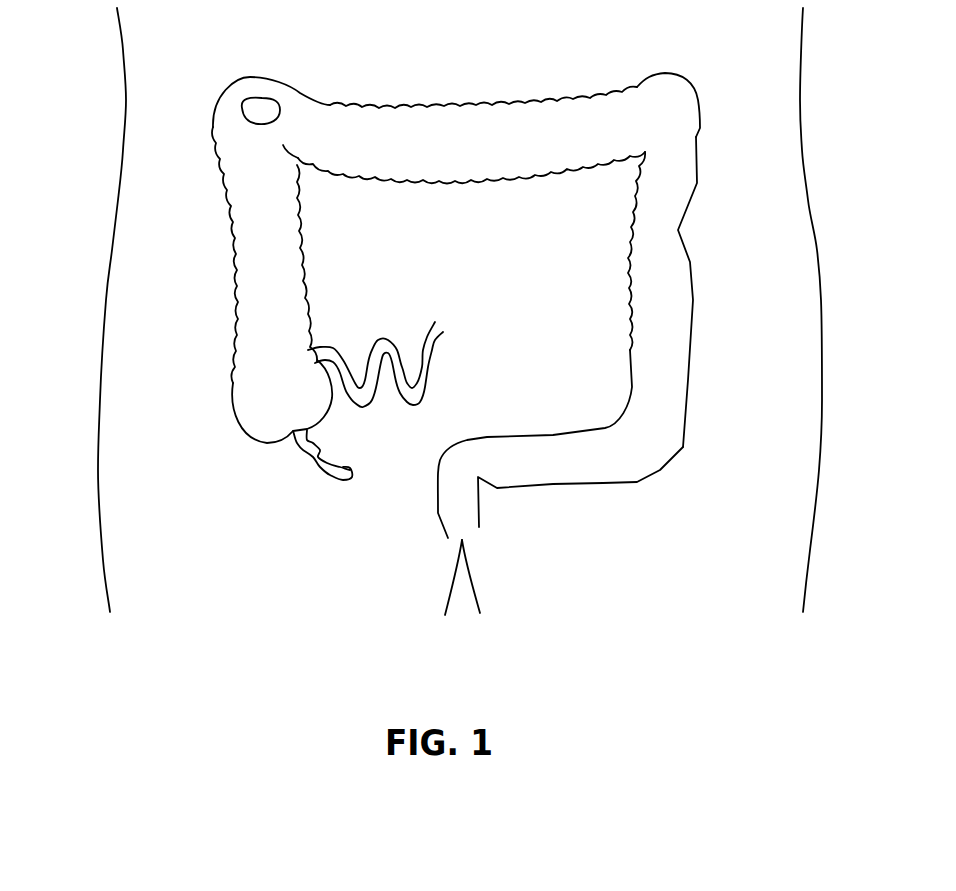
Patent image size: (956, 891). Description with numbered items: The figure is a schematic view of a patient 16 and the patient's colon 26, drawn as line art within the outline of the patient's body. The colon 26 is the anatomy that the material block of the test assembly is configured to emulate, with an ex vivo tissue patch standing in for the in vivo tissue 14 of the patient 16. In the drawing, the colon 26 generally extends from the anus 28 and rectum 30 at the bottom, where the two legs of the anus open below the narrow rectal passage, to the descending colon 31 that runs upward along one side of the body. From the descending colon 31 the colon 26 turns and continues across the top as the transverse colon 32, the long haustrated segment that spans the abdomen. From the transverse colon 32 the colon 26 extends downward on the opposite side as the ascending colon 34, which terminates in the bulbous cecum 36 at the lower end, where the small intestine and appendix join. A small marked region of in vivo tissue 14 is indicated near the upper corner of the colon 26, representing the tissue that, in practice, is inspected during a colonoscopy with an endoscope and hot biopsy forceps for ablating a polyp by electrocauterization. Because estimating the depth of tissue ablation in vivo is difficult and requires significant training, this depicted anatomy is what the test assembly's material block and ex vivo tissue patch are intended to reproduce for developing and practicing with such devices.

The in vivo tissue 14 is at (263, 108).
The patient 16 is at (123, 52).
The colon 26 is at (421, 106).
The anus 28 is at (455, 538).
The rectum 30 is at (462, 498).
The descending colon 31 is at (693, 285).
The transverse colon 32 is at (493, 103).
The ascending colon 34 is at (232, 262).
The cecum 36 is at (233, 417).